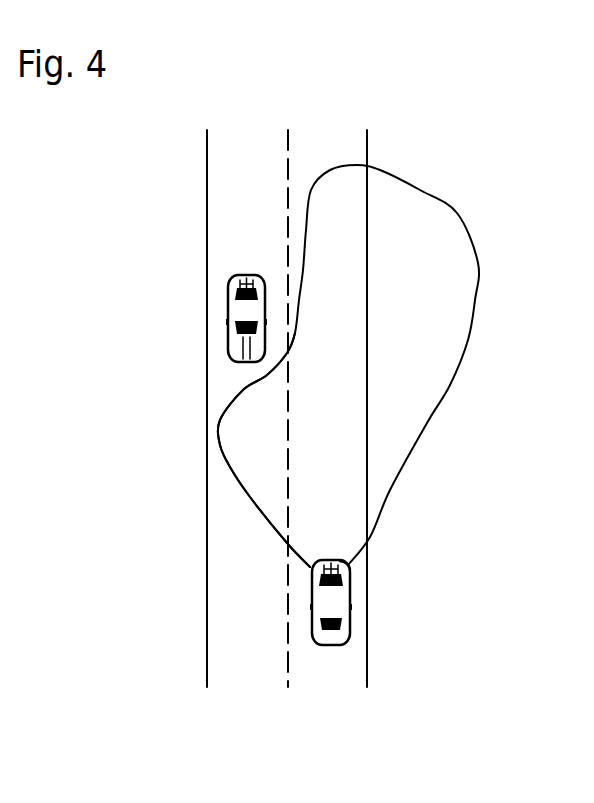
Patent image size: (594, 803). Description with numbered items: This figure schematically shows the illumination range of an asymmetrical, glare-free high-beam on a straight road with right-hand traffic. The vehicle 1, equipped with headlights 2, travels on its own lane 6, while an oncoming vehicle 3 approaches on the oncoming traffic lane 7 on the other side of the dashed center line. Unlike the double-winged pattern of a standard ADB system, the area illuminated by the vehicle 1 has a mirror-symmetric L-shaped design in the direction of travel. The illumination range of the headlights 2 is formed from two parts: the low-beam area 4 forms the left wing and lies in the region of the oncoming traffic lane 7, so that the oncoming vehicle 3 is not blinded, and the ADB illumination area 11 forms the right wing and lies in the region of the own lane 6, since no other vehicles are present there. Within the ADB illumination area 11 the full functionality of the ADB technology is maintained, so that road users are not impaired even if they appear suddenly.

The vehicle 1 is at (335, 607).
The headlights 2 is at (348, 565).
The oncoming vehicle 3 is at (127, 323).
The low-beam area 4 is at (262, 453).
The own lane 6 is at (340, 425).
The oncoming traffic lane 7 is at (233, 378).
The ADB illumination area 11 is at (412, 265).